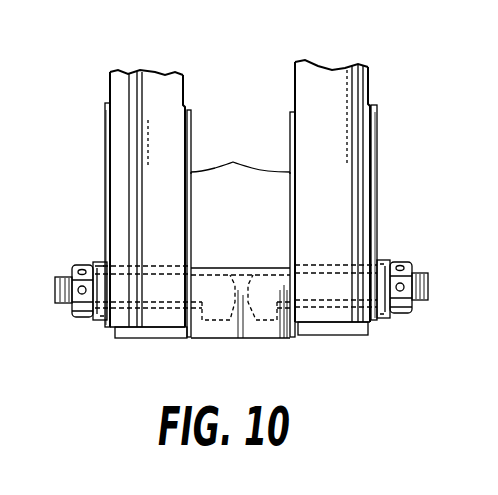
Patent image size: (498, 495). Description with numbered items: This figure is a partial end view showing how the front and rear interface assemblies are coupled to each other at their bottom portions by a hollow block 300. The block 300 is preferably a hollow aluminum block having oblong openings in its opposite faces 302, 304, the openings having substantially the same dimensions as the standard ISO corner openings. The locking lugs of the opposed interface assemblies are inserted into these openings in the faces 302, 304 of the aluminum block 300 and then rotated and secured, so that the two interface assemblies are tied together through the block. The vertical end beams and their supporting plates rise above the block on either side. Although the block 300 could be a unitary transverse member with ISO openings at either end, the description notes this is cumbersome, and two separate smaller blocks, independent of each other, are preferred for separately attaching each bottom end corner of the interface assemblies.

The block 300 is at (219, 266).
The face 302 is at (180, 334).
The face 304 is at (312, 336).